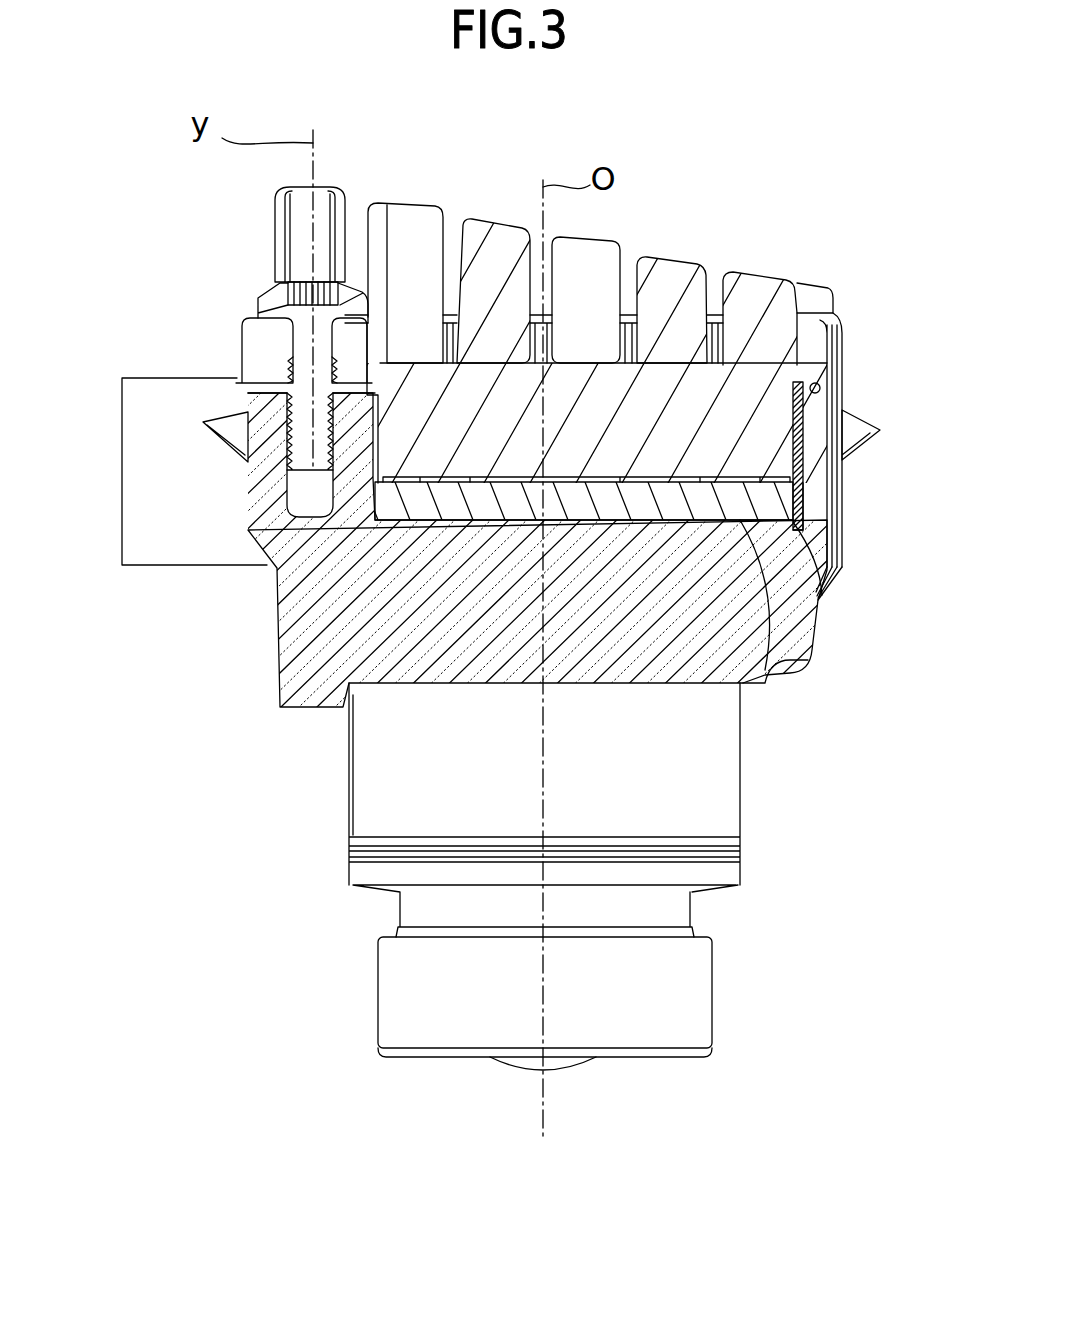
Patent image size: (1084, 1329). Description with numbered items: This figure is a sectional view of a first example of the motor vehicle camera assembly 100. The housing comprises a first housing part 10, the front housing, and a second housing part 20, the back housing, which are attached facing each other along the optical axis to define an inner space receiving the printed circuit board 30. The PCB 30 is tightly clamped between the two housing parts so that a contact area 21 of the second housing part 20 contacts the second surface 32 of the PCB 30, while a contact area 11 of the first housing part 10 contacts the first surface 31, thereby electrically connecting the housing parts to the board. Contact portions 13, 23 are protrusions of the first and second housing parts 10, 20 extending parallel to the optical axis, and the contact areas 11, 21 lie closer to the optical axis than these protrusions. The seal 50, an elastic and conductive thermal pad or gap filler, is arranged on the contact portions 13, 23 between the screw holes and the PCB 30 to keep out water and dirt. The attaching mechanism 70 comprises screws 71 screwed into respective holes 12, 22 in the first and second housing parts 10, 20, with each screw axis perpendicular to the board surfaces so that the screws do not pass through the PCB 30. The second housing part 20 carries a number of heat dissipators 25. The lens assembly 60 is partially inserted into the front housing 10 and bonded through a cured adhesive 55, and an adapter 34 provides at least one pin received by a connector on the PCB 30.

The first housing part 10 is at (268, 693).
The contact area 11 is at (820, 595).
The hole 12 is at (258, 497).
The contact portion 13 is at (860, 423).
The second housing part 20 is at (628, 310).
The contact area 21 is at (770, 335).
The hole 22 is at (243, 375).
The contact portion 23 is at (820, 383).
The heat dissipator 25 is at (670, 267).
The printed circuit board 30 is at (812, 502).
The first surface 31 is at (767, 657).
The second surface 32 is at (715, 477).
The adapter 34 is at (143, 461).
The seal 50 is at (822, 388).
The cured adhesive 55 is at (349, 850).
The lens assembly 60 is at (508, 1071).
The attaching mechanism 70 is at (230, 276).
The screw 71 is at (300, 350).
The motor vehicle camera assembly 100 is at (600, 228).